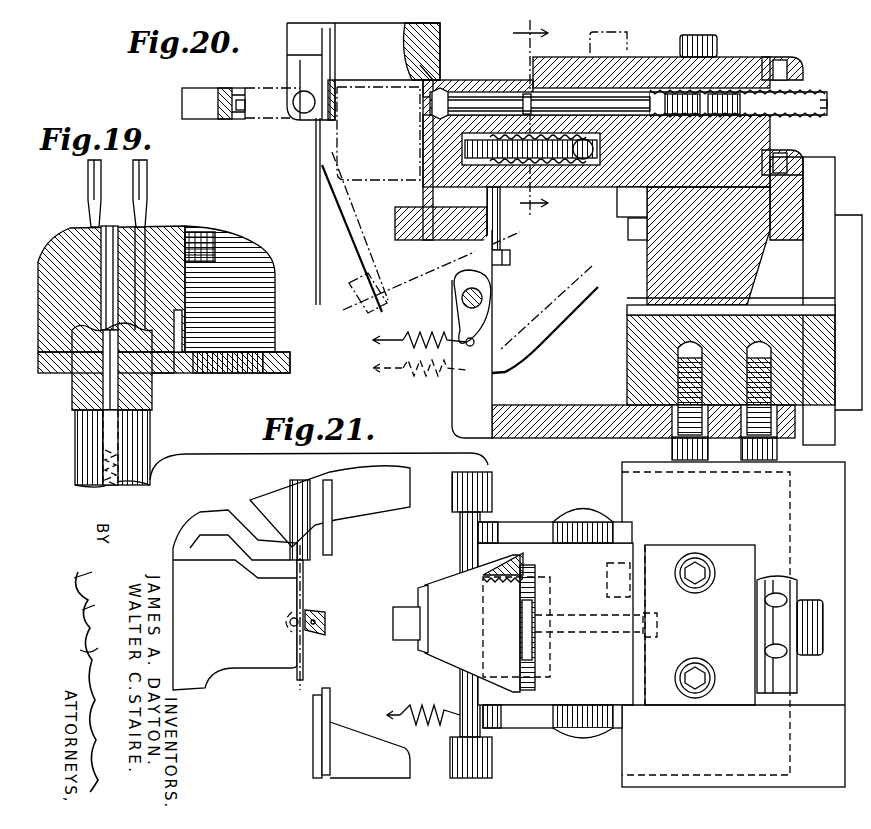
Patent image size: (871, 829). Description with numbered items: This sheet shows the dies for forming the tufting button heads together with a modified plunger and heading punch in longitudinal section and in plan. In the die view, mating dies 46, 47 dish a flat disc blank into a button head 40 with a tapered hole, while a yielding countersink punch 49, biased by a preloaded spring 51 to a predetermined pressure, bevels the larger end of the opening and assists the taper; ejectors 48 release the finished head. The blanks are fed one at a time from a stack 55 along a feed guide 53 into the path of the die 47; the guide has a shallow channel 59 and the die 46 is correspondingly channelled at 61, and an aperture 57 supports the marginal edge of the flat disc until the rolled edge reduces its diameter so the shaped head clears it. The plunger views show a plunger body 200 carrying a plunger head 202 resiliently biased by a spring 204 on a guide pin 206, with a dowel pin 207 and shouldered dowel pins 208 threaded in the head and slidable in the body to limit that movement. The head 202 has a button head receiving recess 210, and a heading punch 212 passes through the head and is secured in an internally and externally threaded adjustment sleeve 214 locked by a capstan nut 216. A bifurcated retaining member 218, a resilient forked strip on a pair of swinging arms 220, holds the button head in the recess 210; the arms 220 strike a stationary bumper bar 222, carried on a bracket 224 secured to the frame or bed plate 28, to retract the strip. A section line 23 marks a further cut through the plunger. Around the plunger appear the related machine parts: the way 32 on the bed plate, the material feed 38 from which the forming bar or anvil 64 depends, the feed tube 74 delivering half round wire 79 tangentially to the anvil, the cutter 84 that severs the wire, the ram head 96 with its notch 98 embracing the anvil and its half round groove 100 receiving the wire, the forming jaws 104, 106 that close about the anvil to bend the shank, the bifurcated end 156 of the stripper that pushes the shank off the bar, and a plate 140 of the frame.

In FIG. 20, the section line 23 is at (521, 115).
In FIG. 20, the frame or bed plate 28 is at (818, 400).
In FIG. 20, the way or slide 32 is at (835, 307).
In FIG. 20, the material feed 38 is at (363, 101).
In FIG. 19, the button head 40 is at (77, 375).
In FIG. 20, the button head 40 is at (422, 70).
In FIG. 21, the button head 40 is at (415, 598).
In FIG. 19, the die 46 is at (75, 233).
In FIG. 19, the die 47 is at (92, 432).
In FIG. 19, the ejector 48 is at (138, 233).
In FIG. 19, the yielding countersink punch 49 is at (107, 393).
In FIG. 19, the preloaded spring 51 is at (100, 460).
In FIG. 19, the feed guide 53 is at (267, 367).
In FIG. 19, the stack 55 is at (228, 272).
In FIG. 19, the aperture 57 is at (152, 380).
In FIG. 19, the shallow channel 59 is at (183, 373).
In FIG. 19, the channel 61 is at (163, 372).
In FIG. 20, the forming bar or anvil 64 is at (317, 80).
In FIG. 21, the forming bar or anvil 64 is at (317, 607).
In FIG. 20, the feed tube 74 is at (292, 112).
In FIG. 21, the feed tube 74 is at (297, 500).
In FIG. 20, the half round wire 79 is at (292, 92).
In FIG. 21, the half round wire 79 is at (300, 680).
In FIG. 21, the cutter 84 is at (253, 563).
In FIG. 20, the head 96 is at (200, 100).
In FIG. 21, the head 96 is at (262, 660).
In FIG. 21, the notch 98 is at (285, 623).
In FIG. 20, the half round groove 100 is at (240, 118).
In FIG. 21, the forming jaw 104 is at (378, 773).
In FIG. 21, the forming jaw 106 is at (370, 510).
In FIG. 20, the frame plate 140 is at (817, 173).
In FIG. 21, the frame plate 140 is at (813, 697).
In FIG. 20, the bifurcated end 156 is at (316, 173).
In FIG. 21, the bifurcated end 156 is at (323, 620).
In FIG. 20, the plunger body 200 is at (565, 70).
In FIG. 21, the plunger body 200 is at (727, 557).
In FIG. 20, the plunger head 202 is at (450, 115).
In FIG. 21, the plunger head 202 is at (447, 665).
In FIG. 20, the spring 204 is at (490, 130).
In FIG. 21, the spring 204 is at (528, 613).
In FIG. 20, the guide pin 206 is at (605, 34).
In FIG. 20, the dowel pin 207 is at (527, 90).
In FIG. 21, the dowel pin 207 is at (533, 653).
In FIG. 20, the shouldered dowel pin 208 is at (622, 187).
In FIG. 21, the shouldered dowel pin 208 is at (533, 560).
In FIG. 20, the button head receiving recess 210 is at (432, 92).
In FIG. 21, the button head receiving recess 210 is at (425, 587).
In FIG. 20, the heading punch 212 is at (623, 100).
In FIG. 21, the heading punch 212 is at (553, 615).
In FIG. 20, the adjustment sleeve 214 is at (725, 72).
In FIG. 21, the adjustment sleeve 214 is at (807, 607).
In FIG. 20, the capstan nut 216 is at (808, 50).
In FIG. 21, the capstan nut 216 is at (797, 583).
In FIG. 20, the bifurcated retaining member 218 is at (422, 190).
In FIG. 21, the bifurcated retaining member 218 is at (413, 650).
In FIG. 20, the swinging arm 220 is at (567, 307).
In FIG. 21, the swinging arm 220 is at (530, 530).
In FIG. 20, the stationary bumper bar 222 is at (452, 302).
In FIG. 21, the stationary bumper bar 222 is at (463, 530).
In FIG. 20, the bracket 224 is at (560, 407).